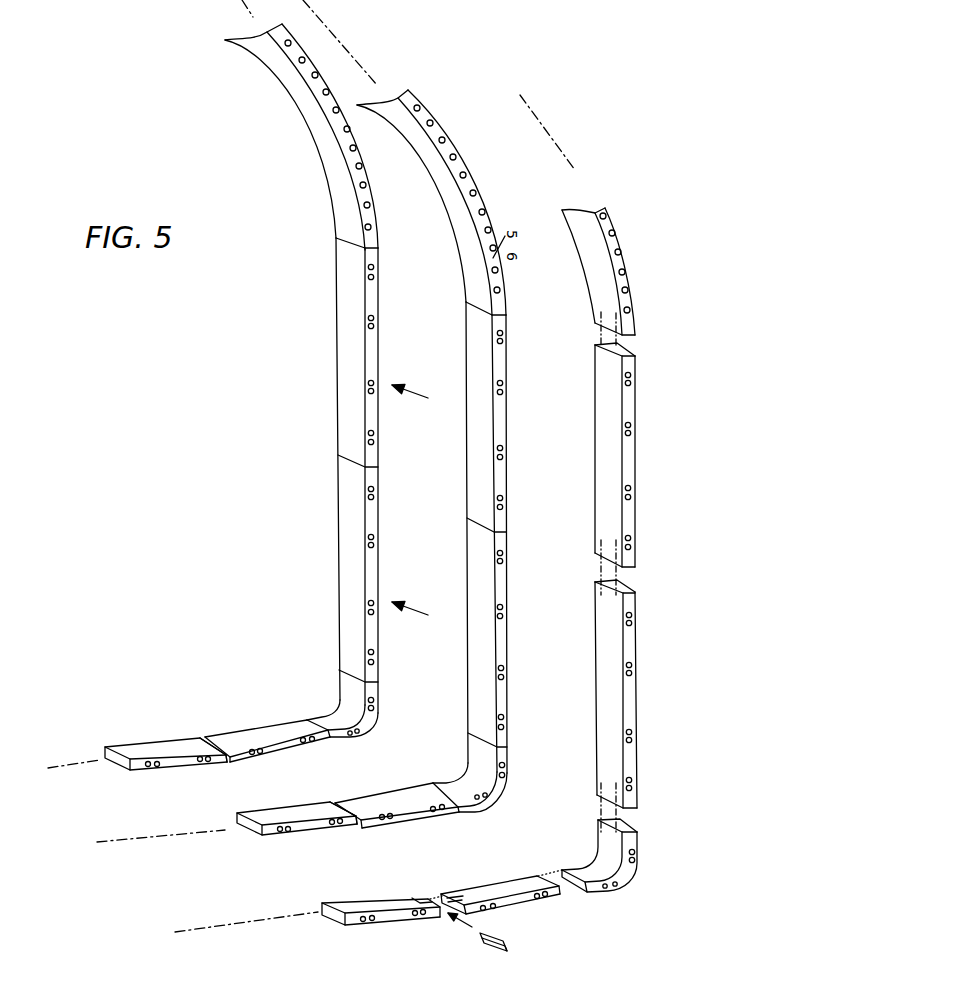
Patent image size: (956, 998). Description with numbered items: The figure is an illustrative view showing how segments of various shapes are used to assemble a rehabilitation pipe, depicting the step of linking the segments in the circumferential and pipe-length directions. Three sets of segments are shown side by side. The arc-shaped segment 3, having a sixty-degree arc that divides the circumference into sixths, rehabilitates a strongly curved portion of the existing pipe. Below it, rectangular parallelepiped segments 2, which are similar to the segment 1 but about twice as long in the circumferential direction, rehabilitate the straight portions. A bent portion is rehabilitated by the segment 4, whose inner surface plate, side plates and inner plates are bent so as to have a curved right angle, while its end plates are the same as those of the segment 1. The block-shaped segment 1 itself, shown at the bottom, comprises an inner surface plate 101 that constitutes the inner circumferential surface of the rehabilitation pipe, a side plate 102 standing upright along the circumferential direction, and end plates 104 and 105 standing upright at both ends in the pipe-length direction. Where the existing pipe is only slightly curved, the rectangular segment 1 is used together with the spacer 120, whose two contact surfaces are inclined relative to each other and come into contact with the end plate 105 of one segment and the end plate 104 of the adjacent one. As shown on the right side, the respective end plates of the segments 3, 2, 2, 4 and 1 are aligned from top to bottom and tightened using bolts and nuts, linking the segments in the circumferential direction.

The segment 1 is at (349, 824).
The rectangular parallelepiped segment 2 is at (378, 340).
The arc-shaped segment 3 is at (372, 188).
The segment 4 is at (340, 703).
The inner surface plate 101 is at (412, 897).
The side plate 102 is at (392, 920).
The end plate 104 is at (538, 875).
The end plate 105 is at (330, 903).
The spacer 120 is at (203, 737).